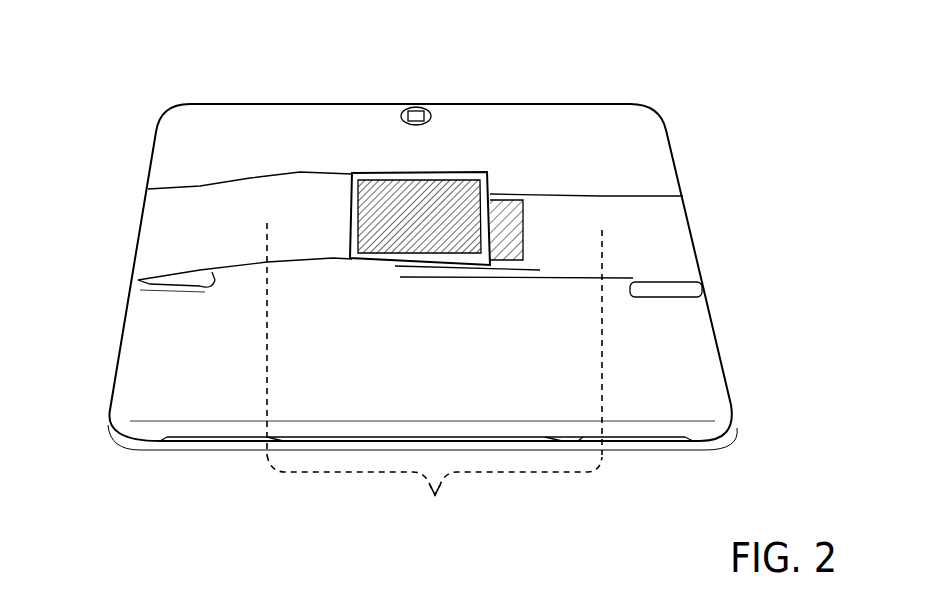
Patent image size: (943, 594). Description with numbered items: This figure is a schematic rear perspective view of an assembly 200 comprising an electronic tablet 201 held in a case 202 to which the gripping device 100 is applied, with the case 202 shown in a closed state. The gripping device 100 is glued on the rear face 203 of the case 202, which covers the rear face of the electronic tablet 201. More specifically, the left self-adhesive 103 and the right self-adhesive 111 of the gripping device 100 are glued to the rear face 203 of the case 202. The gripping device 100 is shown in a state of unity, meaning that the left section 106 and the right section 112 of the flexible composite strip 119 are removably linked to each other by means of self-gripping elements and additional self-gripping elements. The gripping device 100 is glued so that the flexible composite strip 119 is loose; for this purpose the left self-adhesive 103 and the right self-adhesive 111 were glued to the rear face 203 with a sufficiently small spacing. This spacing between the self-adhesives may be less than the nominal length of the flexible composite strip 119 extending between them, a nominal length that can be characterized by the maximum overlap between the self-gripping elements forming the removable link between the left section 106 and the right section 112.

The assembly 200 is at (37, 48).
The gripping device 100 is at (472, 157).
The left section 106 is at (290, 187).
The right section 112 is at (572, 205).
The case 202 is at (685, 137).
The left self-adhesive 103 is at (156, 230).
The right self-adhesive 111 is at (672, 228).
The rear face 203 is at (682, 315).
The electronic tablet 201 is at (356, 443).
The flexible composite strip 119 is at (435, 511).